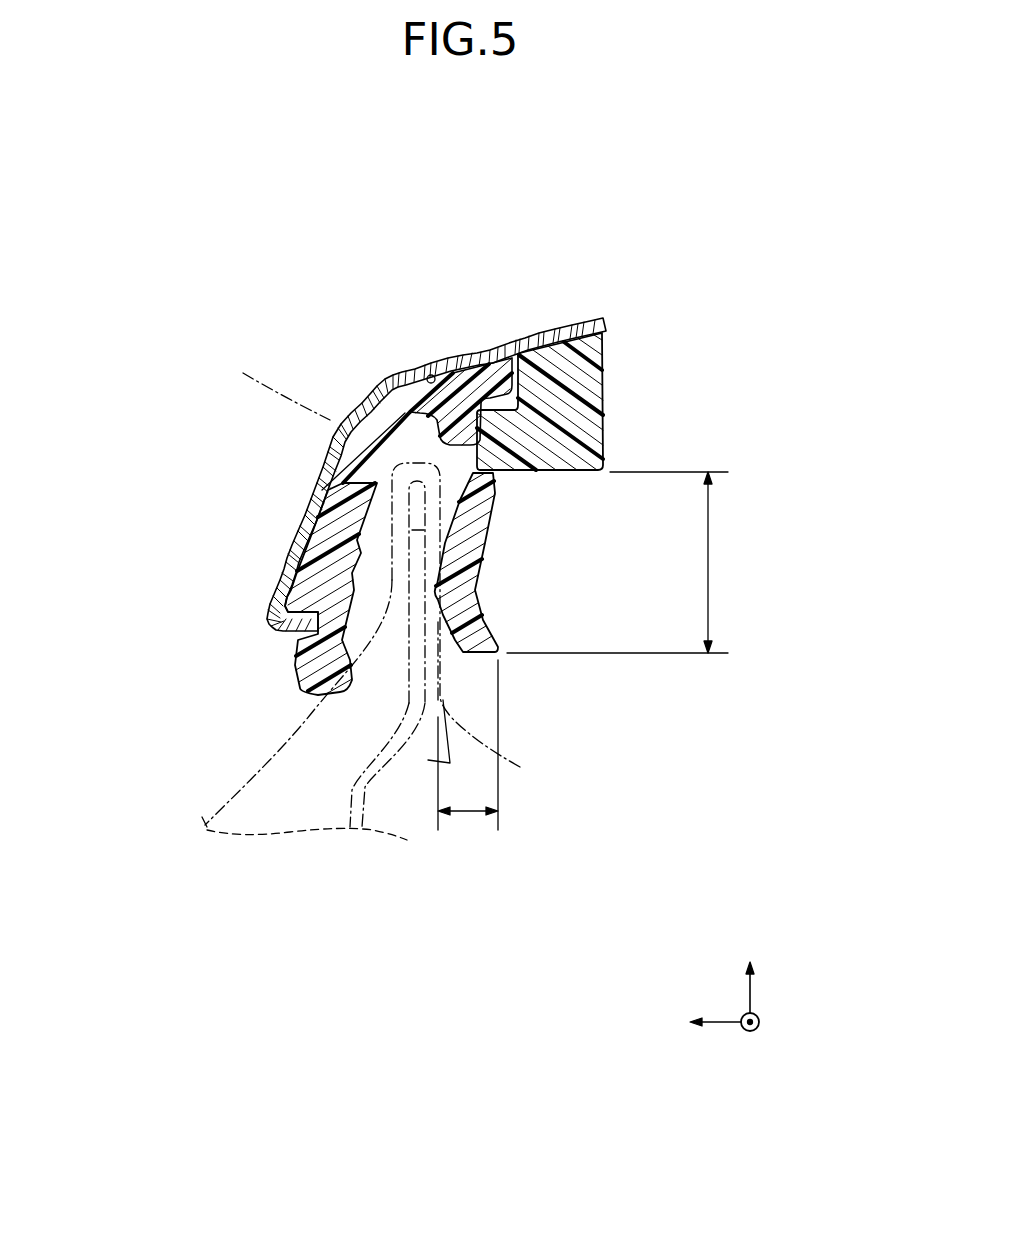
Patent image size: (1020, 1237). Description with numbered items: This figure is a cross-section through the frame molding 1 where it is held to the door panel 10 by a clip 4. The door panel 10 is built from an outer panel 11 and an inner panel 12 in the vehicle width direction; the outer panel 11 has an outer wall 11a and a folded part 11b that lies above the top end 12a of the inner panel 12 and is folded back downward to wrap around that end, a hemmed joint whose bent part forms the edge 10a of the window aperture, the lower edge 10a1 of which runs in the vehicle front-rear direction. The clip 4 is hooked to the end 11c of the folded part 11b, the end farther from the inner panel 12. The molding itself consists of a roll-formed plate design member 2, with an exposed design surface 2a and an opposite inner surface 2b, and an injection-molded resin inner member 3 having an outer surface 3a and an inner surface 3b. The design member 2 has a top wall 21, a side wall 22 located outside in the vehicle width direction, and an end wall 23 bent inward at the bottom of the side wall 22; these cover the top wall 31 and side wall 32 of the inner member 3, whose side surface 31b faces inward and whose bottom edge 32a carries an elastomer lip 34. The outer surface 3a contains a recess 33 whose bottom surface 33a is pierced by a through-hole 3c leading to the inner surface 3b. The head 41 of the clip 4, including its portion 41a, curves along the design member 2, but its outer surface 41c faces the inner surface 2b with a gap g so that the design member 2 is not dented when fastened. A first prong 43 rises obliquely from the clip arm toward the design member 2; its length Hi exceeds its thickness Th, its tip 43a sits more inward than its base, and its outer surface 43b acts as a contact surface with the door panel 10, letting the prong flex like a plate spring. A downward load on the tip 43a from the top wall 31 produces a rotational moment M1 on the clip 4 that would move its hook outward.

The frame molding 1 is at (340, 215).
The design member 2 is at (393, 424).
The design surface 2a is at (386, 424).
The inner surface 2b is at (386, 424).
The top wall 21 is at (386, 424).
The side wall 22 is at (386, 486).
The end wall 23 is at (287, 630).
The inner member 3 is at (459, 472).
The outer surface 3a is at (459, 472).
The inner surface 3b is at (459, 472).
The through-hole 3c is at (459, 472).
The top wall 31 is at (628, 401).
The side surface 31b is at (603, 352).
The side wall 32 is at (259, 597).
The bottom edge 32a is at (273, 597).
The recess 33 is at (344, 357).
The bottom surface 33a is at (500, 413).
The lip 34 is at (298, 684).
The clip 4 is at (404, 355).
The head 41 is at (421, 355).
The attaching lip end 41a is at (424, 355).
The outer surface 41c is at (385, 413).
The gap g is at (427, 376).
The first prong 43 is at (533, 601).
The tip 43a is at (533, 562).
The outer surface 43b is at (445, 592).
The door panel 10 is at (349, 647).
The edge 10a is at (261, 382).
The lower edge 10a1 is at (261, 382).
The outer panel 11 is at (345, 691).
The outer wall 11a is at (389, 691).
The folded part 11b is at (401, 691).
The end 11c is at (423, 747).
The inner panel 12 is at (439, 715).
The top end 12a is at (445, 553).
The length Hi is at (710, 557).
The thickness Th is at (464, 814).
The rotational moment M1 is at (617, 875).